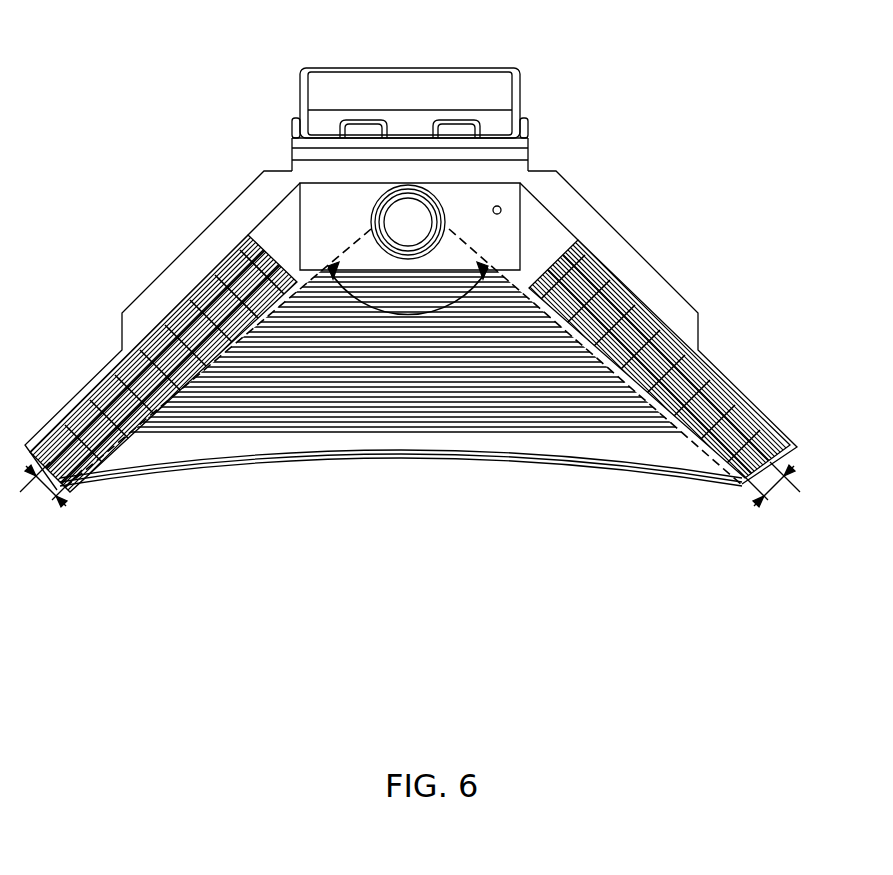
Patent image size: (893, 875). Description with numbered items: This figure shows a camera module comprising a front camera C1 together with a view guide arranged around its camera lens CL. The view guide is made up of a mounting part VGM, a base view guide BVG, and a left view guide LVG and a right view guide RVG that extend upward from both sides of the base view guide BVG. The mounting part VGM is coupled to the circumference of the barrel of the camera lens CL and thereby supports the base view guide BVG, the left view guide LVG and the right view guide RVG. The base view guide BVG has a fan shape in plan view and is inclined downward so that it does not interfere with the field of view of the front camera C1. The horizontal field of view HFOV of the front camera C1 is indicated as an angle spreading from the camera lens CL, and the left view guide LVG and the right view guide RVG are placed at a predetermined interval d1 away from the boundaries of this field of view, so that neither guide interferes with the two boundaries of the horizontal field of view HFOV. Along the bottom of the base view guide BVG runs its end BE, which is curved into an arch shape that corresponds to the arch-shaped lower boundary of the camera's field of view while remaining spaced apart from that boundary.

The camera lens CL is at (407, 216).
The front camera C1 is at (476, 86).
The mounting part VGM is at (323, 210).
The left view guide LVG is at (196, 290).
The right view guide RVG is at (630, 284).
The horizontal field of view HFOV is at (402, 359).
The base view guide BVG is at (531, 420).
The end of the base view guide BE is at (270, 448).
The predetermined interval d1 is at (47, 492).